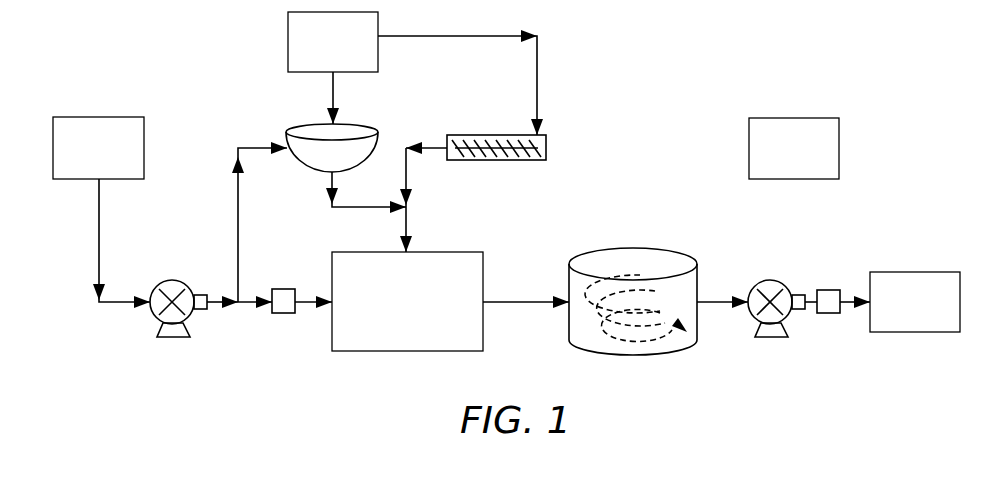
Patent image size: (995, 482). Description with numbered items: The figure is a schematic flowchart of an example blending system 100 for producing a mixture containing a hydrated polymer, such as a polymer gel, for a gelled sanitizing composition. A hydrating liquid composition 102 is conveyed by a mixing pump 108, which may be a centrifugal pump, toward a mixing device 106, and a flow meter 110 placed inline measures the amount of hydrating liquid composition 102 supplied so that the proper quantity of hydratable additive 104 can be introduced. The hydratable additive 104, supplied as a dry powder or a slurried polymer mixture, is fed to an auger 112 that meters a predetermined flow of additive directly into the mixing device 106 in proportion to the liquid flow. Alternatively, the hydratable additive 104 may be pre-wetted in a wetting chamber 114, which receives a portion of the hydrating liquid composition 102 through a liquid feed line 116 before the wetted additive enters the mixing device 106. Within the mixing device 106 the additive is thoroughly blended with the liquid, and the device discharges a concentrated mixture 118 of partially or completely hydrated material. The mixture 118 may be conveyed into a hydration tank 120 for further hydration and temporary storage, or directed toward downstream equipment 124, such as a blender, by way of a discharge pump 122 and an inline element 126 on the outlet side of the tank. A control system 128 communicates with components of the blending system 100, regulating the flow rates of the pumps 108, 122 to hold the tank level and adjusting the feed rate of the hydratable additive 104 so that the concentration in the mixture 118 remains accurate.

The blending system 100 is at (684, 106).
The hydrating liquid composition 102 is at (118, 159).
The hydratable additive 104 is at (353, 54).
The mixing device 106 is at (427, 313).
The mixing pump 108 is at (150, 315).
The flow meter 110 is at (283, 314).
The auger 112 is at (497, 162).
The wetting chamber 114 is at (290, 132).
The liquid feed line 116 is at (238, 215).
The concentrated mixture 118 is at (507, 302).
The hydration tank 120 is at (620, 248).
The discharge pump 122 is at (753, 320).
The downstream equipment 124 is at (935, 313).
The second valve 126 is at (828, 315).
The control system 128 is at (814, 160).